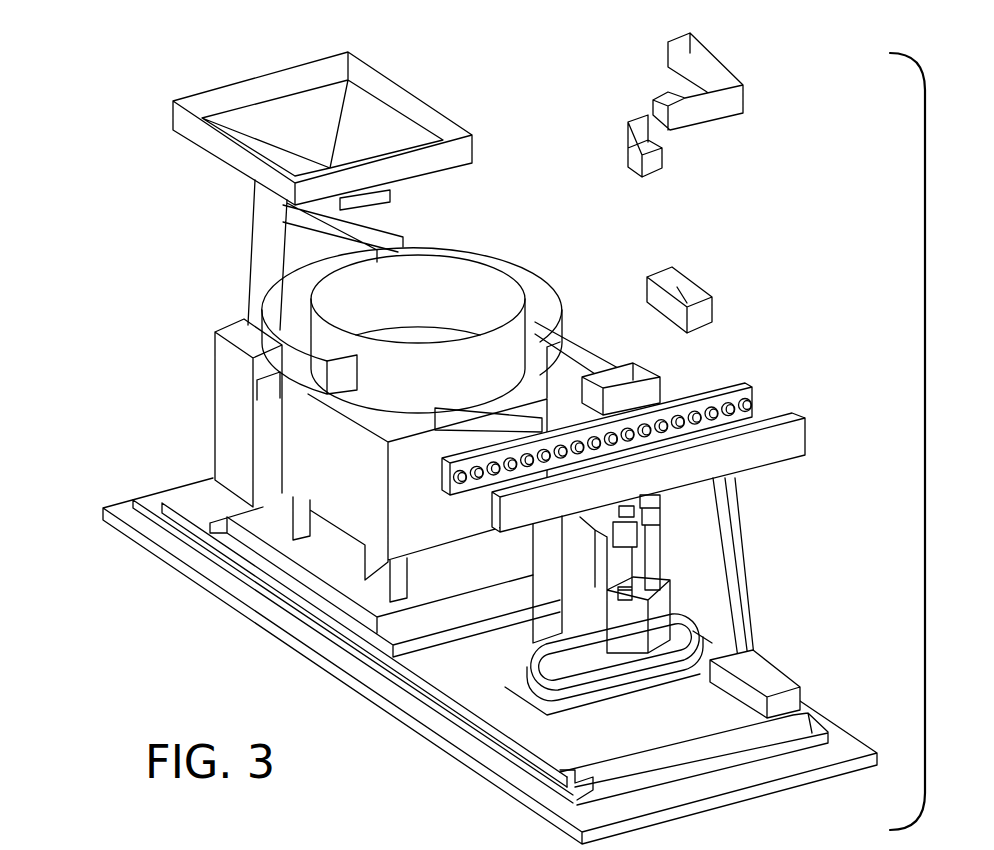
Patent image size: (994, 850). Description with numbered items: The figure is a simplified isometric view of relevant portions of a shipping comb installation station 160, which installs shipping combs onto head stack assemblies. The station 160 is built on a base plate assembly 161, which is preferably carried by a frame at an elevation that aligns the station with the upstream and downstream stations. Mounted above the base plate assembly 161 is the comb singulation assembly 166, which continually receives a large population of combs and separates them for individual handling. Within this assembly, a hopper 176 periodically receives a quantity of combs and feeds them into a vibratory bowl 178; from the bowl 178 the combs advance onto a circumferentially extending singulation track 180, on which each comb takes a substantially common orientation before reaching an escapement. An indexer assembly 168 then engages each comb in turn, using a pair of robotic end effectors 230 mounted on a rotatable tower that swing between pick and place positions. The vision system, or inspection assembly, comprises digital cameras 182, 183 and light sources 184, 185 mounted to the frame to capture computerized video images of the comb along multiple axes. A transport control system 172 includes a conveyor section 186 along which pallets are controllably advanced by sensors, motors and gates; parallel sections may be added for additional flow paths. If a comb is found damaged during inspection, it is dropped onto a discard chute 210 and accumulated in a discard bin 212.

The shipping comb installation station 160 is at (88, 252).
The base plate assembly 161 is at (233, 587).
The comb singulation assembly 166 is at (463, 222).
The indexer assembly 168 is at (656, 702).
The transport control system 172 is at (812, 399).
The hopper 176 is at (390, 123).
The vibratory bowl 178 is at (478, 302).
The singulation track 180 is at (582, 350).
The digital camera 182 is at (670, 93).
The digital camera 183 is at (662, 162).
The light source 184 is at (693, 292).
The light source 185 is at (647, 393).
The conveyor section 186 is at (752, 455).
The discard chute 210 is at (737, 587).
The discard bin 212 is at (779, 682).
The robotic end effectors 230 is at (607, 540).